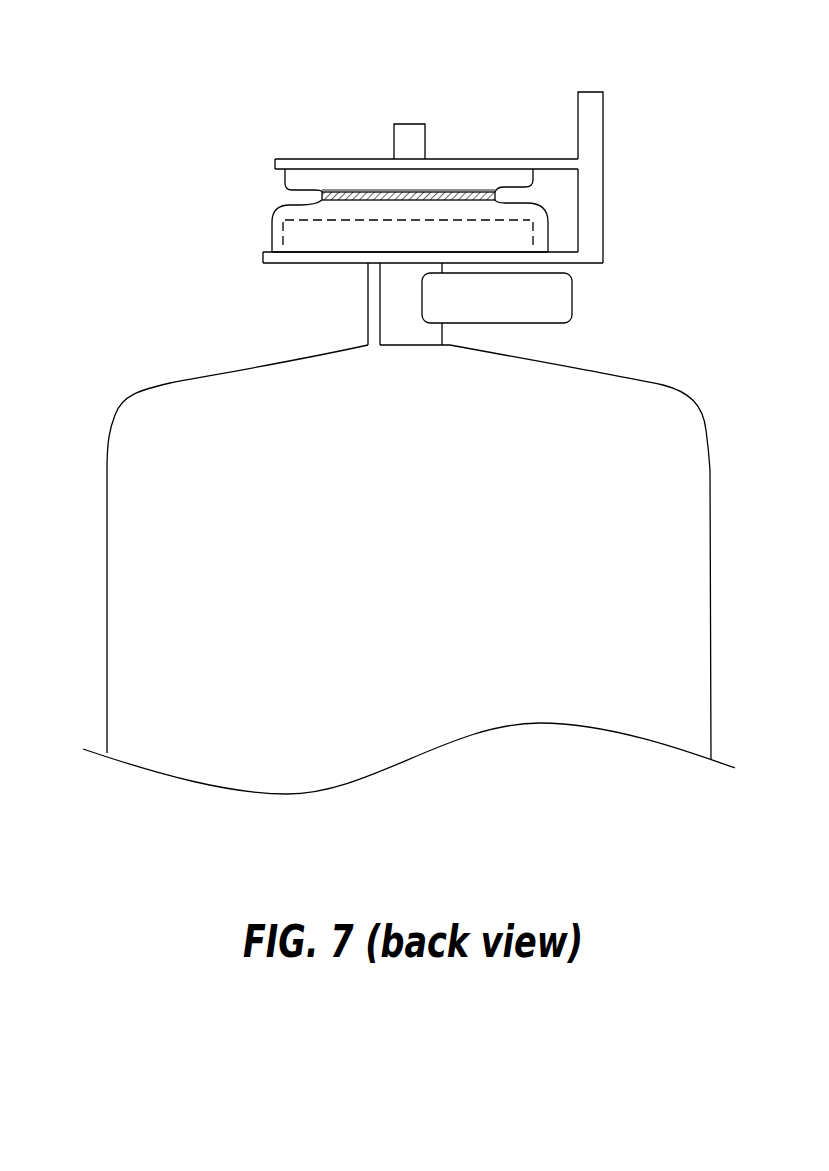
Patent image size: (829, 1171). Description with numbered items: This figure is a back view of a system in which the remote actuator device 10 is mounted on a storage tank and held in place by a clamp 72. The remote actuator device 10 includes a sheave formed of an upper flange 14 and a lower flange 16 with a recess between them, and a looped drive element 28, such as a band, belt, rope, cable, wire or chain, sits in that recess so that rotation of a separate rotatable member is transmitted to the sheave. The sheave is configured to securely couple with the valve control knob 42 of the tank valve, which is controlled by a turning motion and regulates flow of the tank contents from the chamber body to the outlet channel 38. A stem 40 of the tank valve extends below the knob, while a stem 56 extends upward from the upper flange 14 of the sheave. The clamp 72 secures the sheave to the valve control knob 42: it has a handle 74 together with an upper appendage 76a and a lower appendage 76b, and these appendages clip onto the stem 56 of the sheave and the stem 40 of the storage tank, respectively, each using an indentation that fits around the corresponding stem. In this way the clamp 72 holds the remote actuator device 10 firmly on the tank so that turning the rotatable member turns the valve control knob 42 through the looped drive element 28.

The remote actuator device 10 is at (260, 90).
The upper flange 14 is at (362, 168).
The lower flange 16 is at (268, 243).
The looped drive element 28 is at (317, 197).
The outlet channel 38 is at (572, 299).
The stem 40 is at (403, 337).
The valve control knob 42 is at (332, 252).
The stem 56 is at (411, 124).
The clamp 72 is at (455, 212).
The handle 74 is at (603, 119).
The upper appendage 76a is at (540, 159).
The lower appendage 76b is at (368, 265).